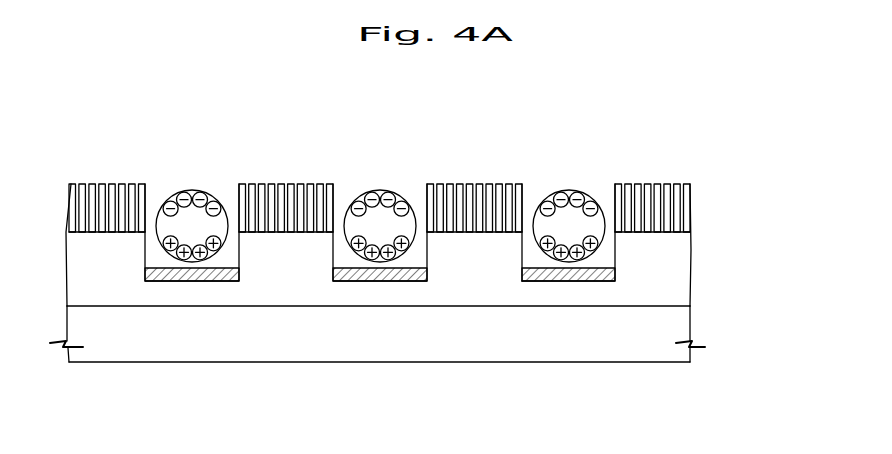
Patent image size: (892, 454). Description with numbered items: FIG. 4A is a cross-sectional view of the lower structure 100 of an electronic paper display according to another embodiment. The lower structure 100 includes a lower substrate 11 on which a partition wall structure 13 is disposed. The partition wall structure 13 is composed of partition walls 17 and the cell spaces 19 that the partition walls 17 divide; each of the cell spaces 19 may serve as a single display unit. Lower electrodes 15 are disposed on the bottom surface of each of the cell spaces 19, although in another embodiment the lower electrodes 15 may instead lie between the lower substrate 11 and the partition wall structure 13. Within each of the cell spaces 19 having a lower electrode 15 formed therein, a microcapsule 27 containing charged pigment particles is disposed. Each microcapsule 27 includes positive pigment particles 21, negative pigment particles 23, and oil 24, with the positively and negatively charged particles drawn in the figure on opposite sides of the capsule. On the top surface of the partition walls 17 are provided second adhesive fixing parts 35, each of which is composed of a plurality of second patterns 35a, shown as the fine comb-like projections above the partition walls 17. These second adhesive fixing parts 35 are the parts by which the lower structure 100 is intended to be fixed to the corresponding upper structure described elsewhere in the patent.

The lower structure 100 is at (603, 147).
The lower substrate 11 is at (678, 330).
The partition wall structure 13 is at (755, 215).
The lower electrodes 15 is at (607, 275).
The partition walls 17 is at (683, 267).
The cell spaces 19 is at (613, 248).
The positive pigment particles 21 is at (216, 236).
The negative pigment particles 23 is at (188, 190).
The oil 24 is at (166, 223).
The microcapsules 27 is at (257, 133).
The second adhesive fixing parts 35 is at (690, 179).
The second patterns 35a is at (677, 210).